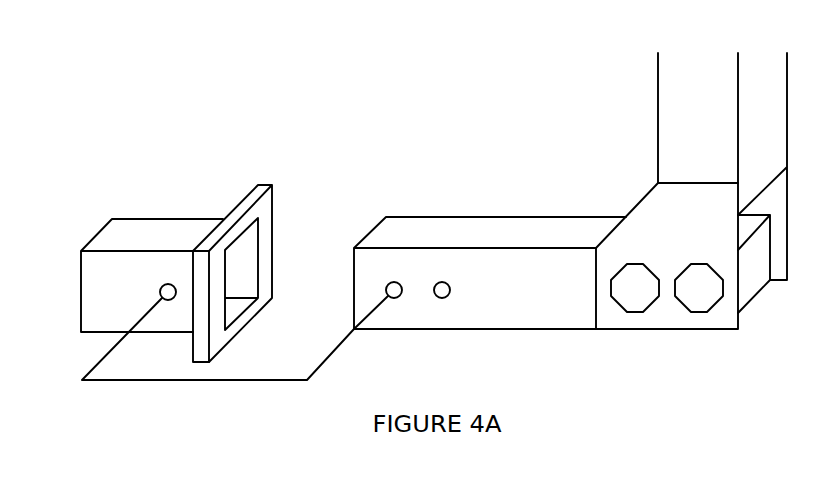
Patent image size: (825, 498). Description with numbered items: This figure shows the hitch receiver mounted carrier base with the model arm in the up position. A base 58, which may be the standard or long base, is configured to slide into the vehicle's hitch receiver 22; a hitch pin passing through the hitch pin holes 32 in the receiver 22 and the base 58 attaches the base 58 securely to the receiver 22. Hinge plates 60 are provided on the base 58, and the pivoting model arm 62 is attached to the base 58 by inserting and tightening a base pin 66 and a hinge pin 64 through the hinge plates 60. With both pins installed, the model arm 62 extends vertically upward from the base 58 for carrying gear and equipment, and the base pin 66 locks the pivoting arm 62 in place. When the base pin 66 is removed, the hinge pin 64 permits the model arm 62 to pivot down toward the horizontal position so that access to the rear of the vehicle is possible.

The receiver 22 is at (176, 233).
The hitch pin holes 32 is at (193, 380).
The base 58 is at (386, 233).
The hinge plates 60 is at (660, 215).
The pivoting model arm 62 is at (692, 87).
The hinge pin 64 is at (699, 297).
The base pin 66 is at (635, 297).